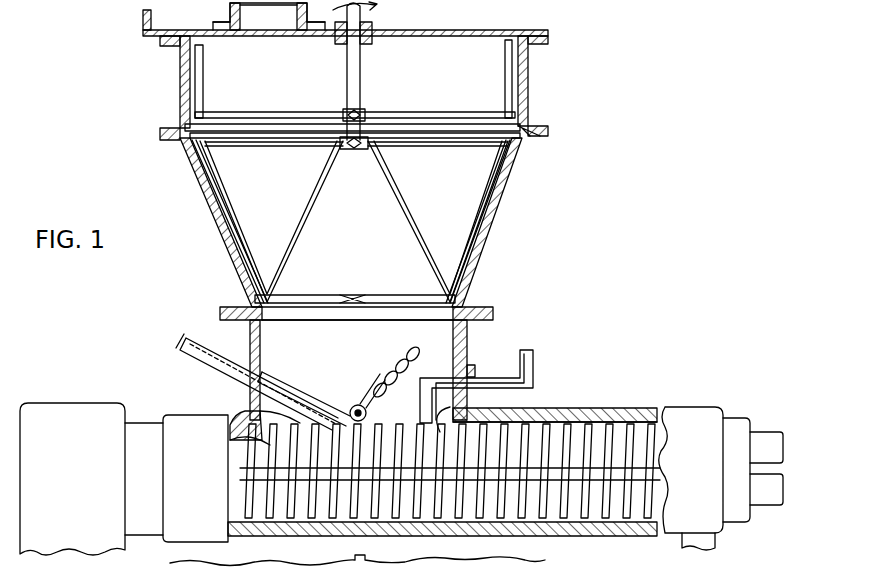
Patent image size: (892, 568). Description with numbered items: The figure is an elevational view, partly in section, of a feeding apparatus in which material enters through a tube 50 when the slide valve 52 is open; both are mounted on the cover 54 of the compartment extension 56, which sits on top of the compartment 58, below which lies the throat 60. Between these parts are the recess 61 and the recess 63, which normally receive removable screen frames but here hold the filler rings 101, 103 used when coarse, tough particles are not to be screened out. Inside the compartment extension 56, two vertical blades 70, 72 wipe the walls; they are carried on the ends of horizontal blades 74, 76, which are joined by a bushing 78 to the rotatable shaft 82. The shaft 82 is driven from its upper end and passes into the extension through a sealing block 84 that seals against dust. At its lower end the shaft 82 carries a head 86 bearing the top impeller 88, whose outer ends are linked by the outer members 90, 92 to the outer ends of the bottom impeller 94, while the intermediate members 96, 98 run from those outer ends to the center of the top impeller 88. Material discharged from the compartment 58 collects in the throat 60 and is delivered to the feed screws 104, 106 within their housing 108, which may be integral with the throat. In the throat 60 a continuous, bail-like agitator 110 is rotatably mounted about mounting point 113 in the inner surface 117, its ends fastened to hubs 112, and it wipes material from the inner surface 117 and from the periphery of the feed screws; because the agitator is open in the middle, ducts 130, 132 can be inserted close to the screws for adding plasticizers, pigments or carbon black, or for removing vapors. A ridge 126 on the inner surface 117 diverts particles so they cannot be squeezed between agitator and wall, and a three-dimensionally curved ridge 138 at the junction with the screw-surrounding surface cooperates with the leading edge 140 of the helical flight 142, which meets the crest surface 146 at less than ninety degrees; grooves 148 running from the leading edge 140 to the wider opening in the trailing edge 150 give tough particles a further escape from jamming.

The tube 50 is at (300, 15).
The slide valve 52 is at (154, 23).
The cover 54 is at (435, 34).
The compartment extension 56 is at (528, 76).
The compartment 58 is at (500, 213).
The throat 60 is at (468, 345).
The recess 61 is at (283, 137).
The recess 63 is at (305, 318).
The vertical blade 70 is at (203, 79).
The vertical blade 72 is at (507, 68).
The horizontal blade 74 is at (272, 114).
The horizontal blade 76 is at (455, 112).
The bushing 78 is at (365, 112).
The rotatable shaft 82 is at (360, 72).
The sealing block 84 is at (372, 30).
The head 86 is at (357, 150).
The top impeller 88 is at (430, 144).
The outer member 90 is at (222, 200).
The outer member 92 is at (478, 222).
The bottom impeller 94 is at (405, 298).
The intermediate member 96 is at (310, 222).
The intermediate member 98 is at (408, 232).
The filler ring 101 is at (535, 128).
The filler ring 103 is at (470, 306).
The feed screw 104 is at (660, 448).
The feed screw 106 is at (660, 494).
The housing 108 is at (625, 410).
The agitator 110 is at (412, 352).
The hub 112 is at (340, 385).
The mounting point 113 is at (340, 400).
The inner surface 117 is at (250, 412).
The ridge 126 is at (358, 405).
The duct 130 is at (533, 360).
The duct 132 is at (212, 372).
The curved ridge 138 is at (240, 440).
The leading edge 140 is at (640, 520).
The helical flight 142 is at (560, 420).
The crest surface 146 is at (240, 530).
The groove 148 is at (440, 432).
The trailing edge 150 is at (628, 522).